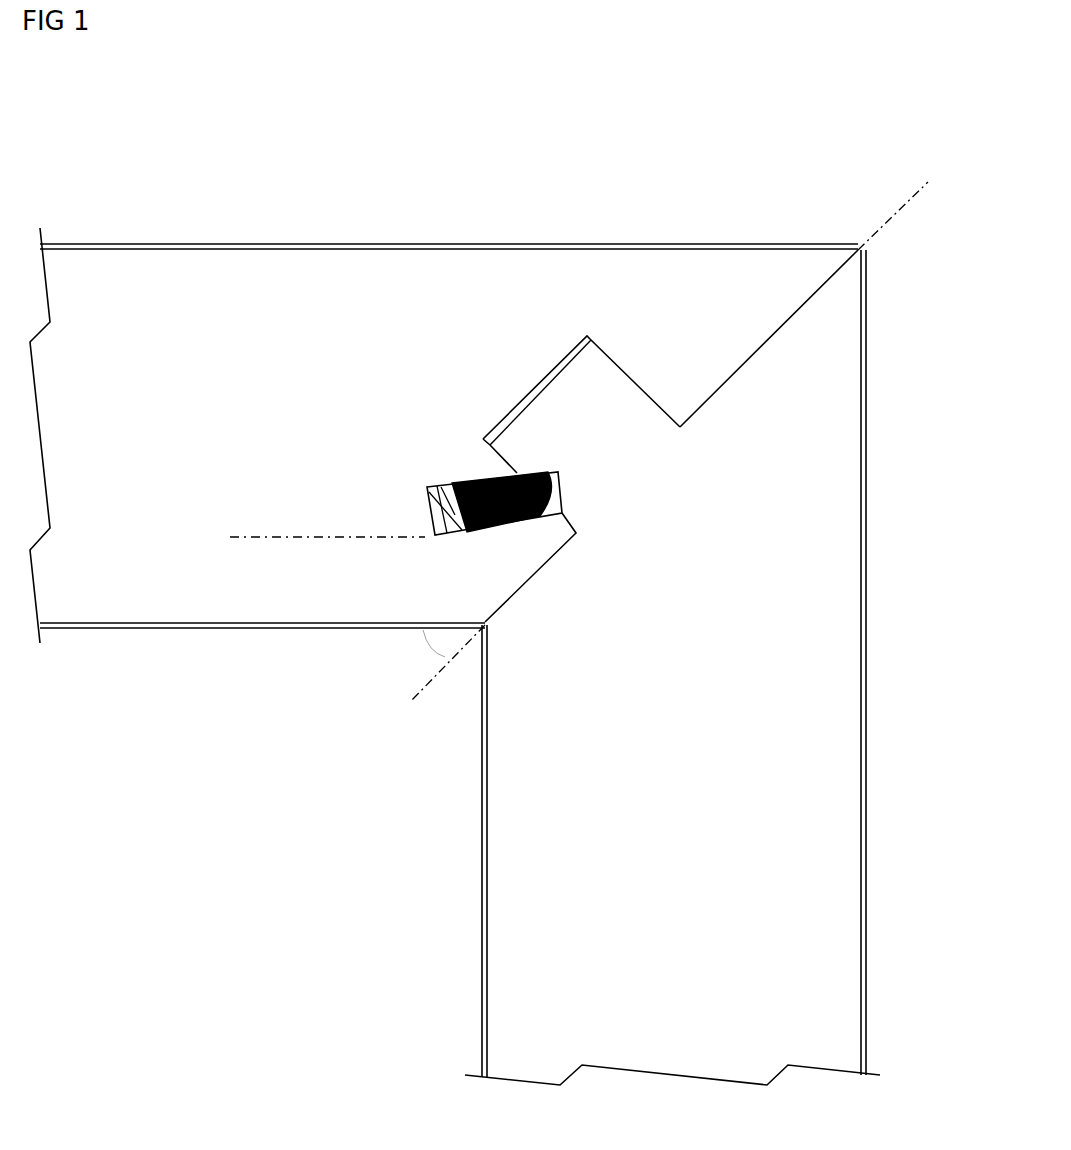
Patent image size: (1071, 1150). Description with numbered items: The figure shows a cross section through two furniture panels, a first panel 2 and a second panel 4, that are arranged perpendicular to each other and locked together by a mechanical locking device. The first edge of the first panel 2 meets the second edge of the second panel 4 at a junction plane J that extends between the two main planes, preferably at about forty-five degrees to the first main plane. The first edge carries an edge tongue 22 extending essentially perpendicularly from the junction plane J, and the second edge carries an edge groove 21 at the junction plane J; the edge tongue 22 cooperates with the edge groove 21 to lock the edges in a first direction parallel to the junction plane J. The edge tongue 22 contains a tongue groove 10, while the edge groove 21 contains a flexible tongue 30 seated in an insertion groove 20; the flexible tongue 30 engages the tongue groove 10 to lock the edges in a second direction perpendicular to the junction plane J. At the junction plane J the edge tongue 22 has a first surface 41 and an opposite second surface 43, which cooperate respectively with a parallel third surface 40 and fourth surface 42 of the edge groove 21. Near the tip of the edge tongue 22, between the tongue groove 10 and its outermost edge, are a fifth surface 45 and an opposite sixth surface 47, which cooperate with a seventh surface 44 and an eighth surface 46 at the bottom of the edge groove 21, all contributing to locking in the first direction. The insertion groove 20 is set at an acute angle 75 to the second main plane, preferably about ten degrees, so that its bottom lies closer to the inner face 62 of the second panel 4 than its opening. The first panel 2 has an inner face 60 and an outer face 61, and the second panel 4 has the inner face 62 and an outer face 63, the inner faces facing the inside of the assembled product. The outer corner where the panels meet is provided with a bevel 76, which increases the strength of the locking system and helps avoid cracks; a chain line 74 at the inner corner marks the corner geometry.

The first panel 2 is at (652, 667).
The second panel 4 is at (444, 437).
The tongue groove 10 is at (522, 543).
The insertion groove 20 is at (527, 384).
The edge groove 21 is at (527, 395).
The edge tongue 22 is at (563, 407).
The flexible tongue 30 is at (467, 533).
The third surface 40 is at (579, 567).
The first surface 41 is at (562, 515).
The fourth surface 42 is at (674, 422).
The second surface 43 is at (678, 428).
The seventh surface 44 is at (495, 450).
The fifth surface 45 is at (503, 450).
The eighth surface 46 is at (597, 351).
The sixth surface 47 is at (597, 353).
The inner face 60 is at (482, 965).
The outer face 61 is at (862, 828).
The inner face 62 is at (110, 628).
The outer face 63 is at (232, 244).
The corner axis 74 is at (435, 662).
The acute angle 75 is at (327, 556).
The bevel 76 is at (857, 250).
The junction plane J is at (893, 202).